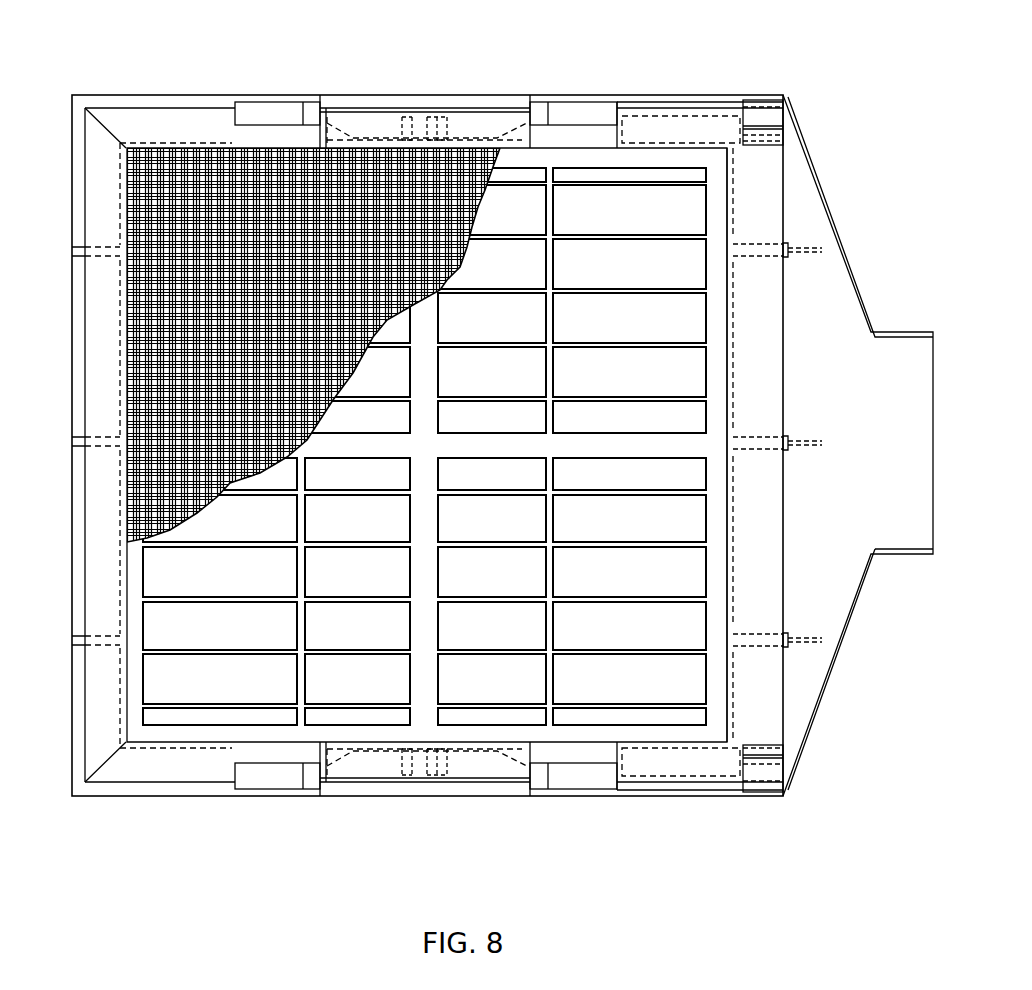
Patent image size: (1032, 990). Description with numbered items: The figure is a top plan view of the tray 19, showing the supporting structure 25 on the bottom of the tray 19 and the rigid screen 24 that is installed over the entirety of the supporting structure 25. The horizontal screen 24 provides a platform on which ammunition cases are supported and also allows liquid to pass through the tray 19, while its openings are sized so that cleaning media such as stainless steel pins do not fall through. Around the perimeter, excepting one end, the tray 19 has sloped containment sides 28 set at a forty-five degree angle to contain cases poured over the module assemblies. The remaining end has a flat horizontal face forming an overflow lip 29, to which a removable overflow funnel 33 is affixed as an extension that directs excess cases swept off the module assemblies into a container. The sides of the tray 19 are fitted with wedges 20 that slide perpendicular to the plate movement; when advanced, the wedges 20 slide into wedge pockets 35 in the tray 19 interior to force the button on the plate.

The tray 19 is at (172, 95).
The wedge 20 is at (305, 115).
The screen 24 is at (192, 198).
The supporting structure 25 is at (610, 180).
The containment side 28 is at (100, 397).
The overflow lip 29 is at (760, 187).
The overflow funnel 33 is at (826, 360).
The wedge pocket 35 is at (578, 772).